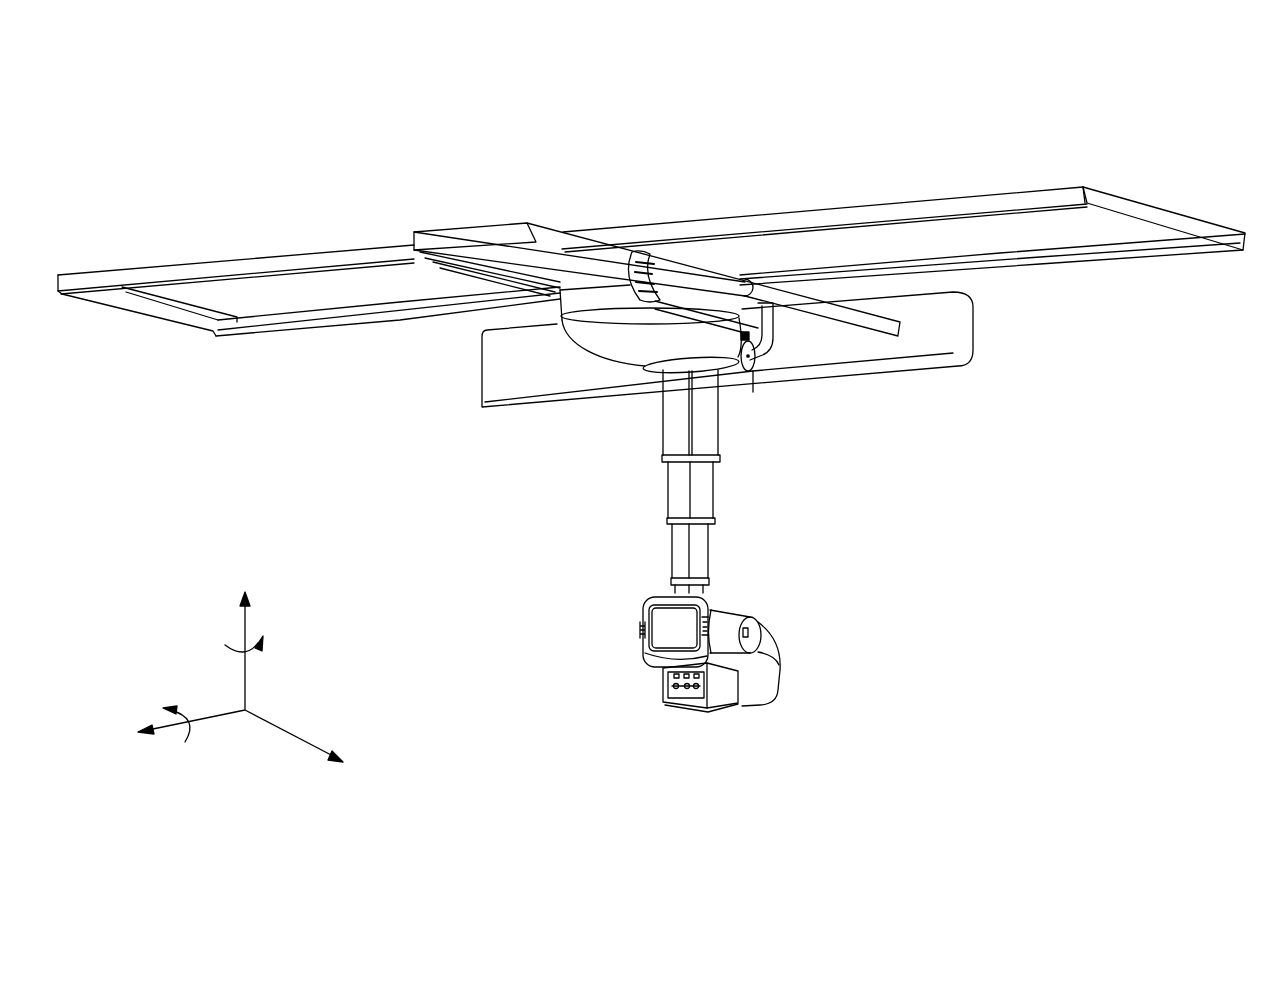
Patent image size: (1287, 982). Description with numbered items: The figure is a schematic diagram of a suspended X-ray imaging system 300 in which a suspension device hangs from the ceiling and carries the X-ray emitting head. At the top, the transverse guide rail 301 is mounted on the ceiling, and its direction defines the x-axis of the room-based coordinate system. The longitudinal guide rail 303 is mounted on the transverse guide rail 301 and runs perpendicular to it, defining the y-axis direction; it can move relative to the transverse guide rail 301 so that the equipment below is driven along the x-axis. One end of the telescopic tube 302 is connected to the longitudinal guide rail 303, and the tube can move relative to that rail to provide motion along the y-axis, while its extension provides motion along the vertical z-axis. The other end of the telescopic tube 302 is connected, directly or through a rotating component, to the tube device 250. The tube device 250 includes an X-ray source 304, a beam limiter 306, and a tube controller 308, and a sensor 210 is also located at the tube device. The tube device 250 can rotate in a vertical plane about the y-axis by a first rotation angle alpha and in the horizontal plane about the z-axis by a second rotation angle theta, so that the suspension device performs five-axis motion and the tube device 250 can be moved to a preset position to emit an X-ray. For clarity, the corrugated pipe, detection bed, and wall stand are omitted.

The suspended X-ray imaging system 300 is at (283, 76).
The transverse guide rail 301 is at (752, 226).
The telescopic tube 302 is at (699, 500).
The longitudinal guide rail 303 is at (468, 242).
The X-ray source 304 is at (733, 611).
The beam limiter 306 is at (727, 690).
The tube controller 308 is at (652, 597).
The sensor 210 is at (748, 630).
The tube device 250 is at (608, 611).